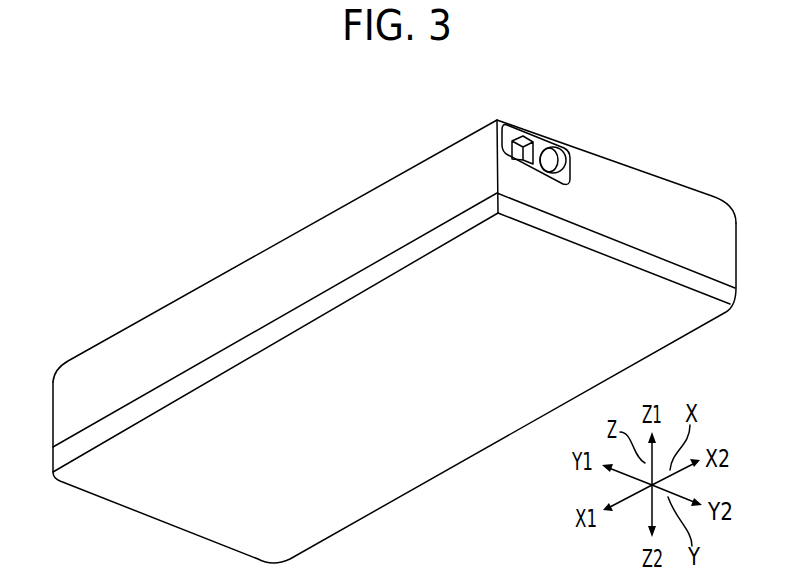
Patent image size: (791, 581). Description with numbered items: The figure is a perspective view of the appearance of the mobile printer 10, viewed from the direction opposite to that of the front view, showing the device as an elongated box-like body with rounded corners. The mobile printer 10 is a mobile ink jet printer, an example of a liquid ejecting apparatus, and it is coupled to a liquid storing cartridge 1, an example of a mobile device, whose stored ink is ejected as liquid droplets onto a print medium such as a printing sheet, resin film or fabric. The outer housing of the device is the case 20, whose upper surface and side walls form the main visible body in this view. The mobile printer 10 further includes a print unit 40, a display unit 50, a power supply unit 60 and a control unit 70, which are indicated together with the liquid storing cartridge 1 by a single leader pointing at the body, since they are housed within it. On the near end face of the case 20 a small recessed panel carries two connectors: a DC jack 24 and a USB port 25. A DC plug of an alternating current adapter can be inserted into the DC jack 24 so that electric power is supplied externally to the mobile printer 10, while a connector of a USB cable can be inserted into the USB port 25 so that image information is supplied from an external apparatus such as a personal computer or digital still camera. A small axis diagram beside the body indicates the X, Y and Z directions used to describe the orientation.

The liquid storing cartridge 1 is at (394, 317).
The mobile printer 10 is at (274, 237).
The case 20 is at (95, 341).
The DC jack 24 is at (527, 137).
The USB port 25 is at (553, 150).
The print unit 40 is at (394, 317).
The display unit 50 is at (394, 317).
The power supply unit 60 is at (394, 317).
The control unit 70 is at (400, 430).